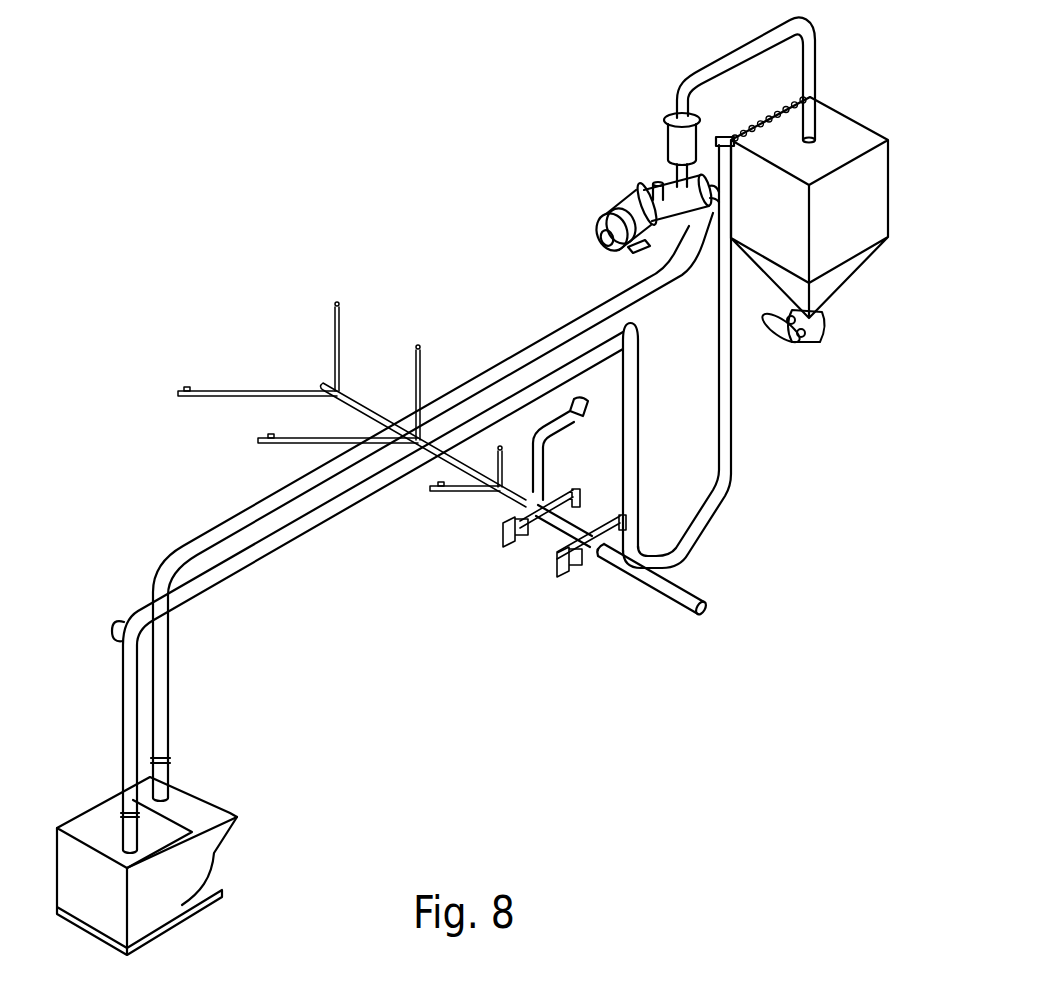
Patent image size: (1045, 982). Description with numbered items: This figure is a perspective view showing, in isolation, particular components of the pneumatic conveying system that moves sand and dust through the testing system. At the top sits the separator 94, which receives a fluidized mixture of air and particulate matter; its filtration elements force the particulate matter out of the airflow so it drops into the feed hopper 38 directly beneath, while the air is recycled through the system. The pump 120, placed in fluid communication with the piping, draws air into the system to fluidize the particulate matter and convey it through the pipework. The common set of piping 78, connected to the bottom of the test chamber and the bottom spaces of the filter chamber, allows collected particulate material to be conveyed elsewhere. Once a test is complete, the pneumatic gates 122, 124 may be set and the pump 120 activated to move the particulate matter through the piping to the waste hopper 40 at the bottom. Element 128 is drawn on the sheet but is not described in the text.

The feed hopper 38 is at (833, 282).
The waste hopper 40 is at (163, 898).
The set of piping 78 is at (356, 400).
The separator 94 is at (877, 197).
The pump 120 is at (640, 188).
The pneumatic gate 122 is at (537, 525).
The pneumatic gate 124 is at (593, 558).
The filter 128 is at (675, 145).